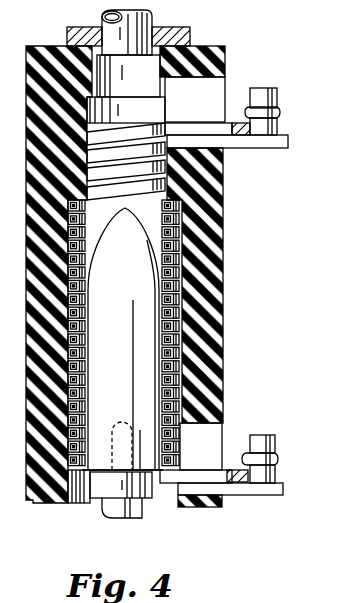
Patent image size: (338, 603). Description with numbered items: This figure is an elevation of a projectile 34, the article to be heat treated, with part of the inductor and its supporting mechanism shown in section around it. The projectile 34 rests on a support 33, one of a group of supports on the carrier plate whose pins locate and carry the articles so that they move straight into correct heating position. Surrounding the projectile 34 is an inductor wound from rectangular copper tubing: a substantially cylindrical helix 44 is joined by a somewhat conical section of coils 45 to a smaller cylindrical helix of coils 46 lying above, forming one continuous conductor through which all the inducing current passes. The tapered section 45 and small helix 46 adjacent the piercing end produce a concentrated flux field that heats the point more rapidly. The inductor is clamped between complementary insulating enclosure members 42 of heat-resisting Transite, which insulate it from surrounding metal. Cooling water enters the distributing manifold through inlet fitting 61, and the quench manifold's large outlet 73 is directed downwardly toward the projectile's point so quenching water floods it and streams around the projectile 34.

The outlet 73 is at (150, 24).
The insulating enclosure member 42 is at (225, 57).
The group of coils 46 is at (183, 166).
The conical section of coils 45 is at (185, 212).
The cylindrical helix 44 is at (182, 323).
The projectile 34 is at (132, 270).
The support 33 is at (104, 509).
The inlet fitting 61 is at (276, 462).